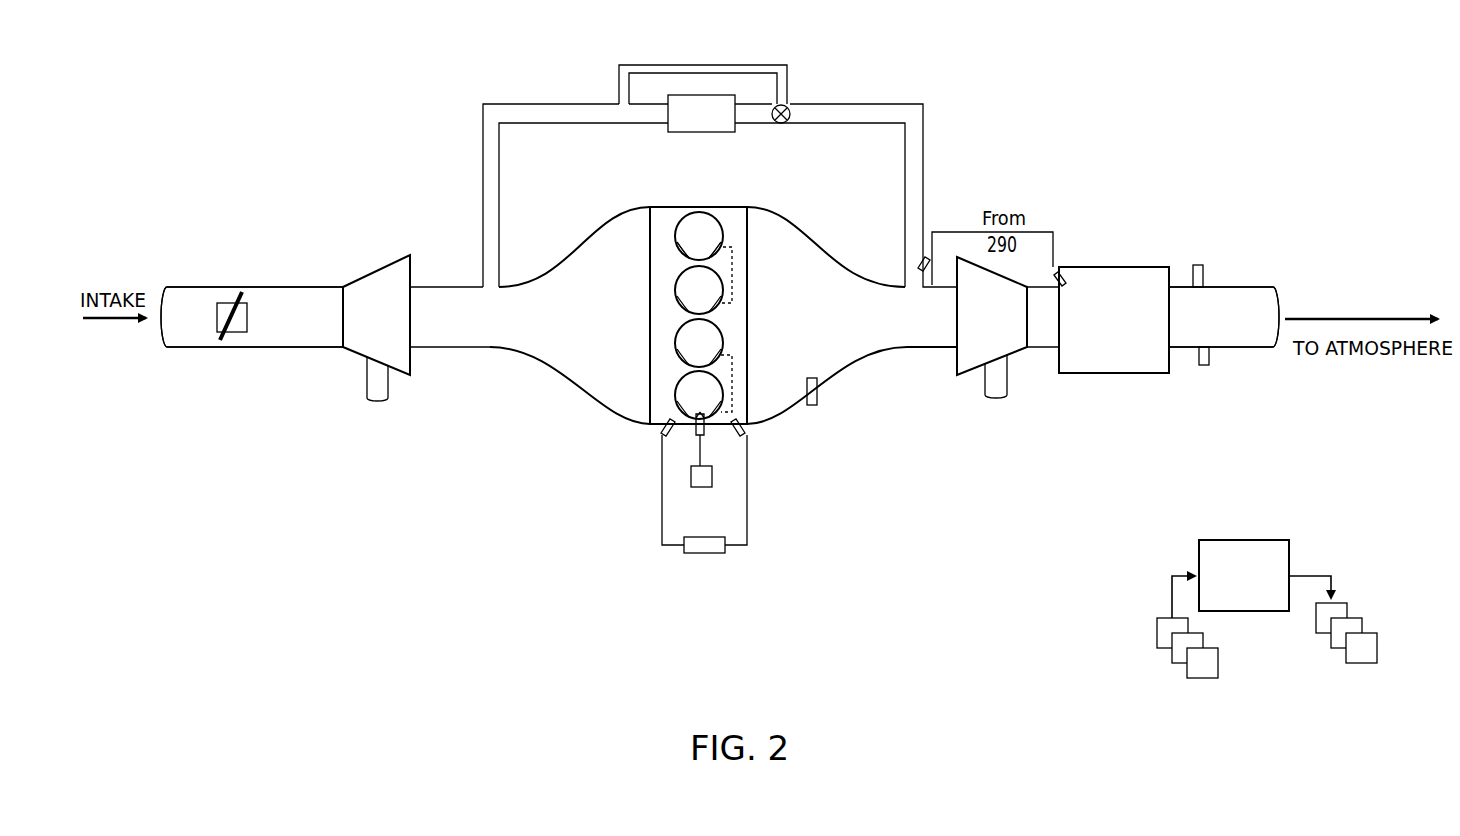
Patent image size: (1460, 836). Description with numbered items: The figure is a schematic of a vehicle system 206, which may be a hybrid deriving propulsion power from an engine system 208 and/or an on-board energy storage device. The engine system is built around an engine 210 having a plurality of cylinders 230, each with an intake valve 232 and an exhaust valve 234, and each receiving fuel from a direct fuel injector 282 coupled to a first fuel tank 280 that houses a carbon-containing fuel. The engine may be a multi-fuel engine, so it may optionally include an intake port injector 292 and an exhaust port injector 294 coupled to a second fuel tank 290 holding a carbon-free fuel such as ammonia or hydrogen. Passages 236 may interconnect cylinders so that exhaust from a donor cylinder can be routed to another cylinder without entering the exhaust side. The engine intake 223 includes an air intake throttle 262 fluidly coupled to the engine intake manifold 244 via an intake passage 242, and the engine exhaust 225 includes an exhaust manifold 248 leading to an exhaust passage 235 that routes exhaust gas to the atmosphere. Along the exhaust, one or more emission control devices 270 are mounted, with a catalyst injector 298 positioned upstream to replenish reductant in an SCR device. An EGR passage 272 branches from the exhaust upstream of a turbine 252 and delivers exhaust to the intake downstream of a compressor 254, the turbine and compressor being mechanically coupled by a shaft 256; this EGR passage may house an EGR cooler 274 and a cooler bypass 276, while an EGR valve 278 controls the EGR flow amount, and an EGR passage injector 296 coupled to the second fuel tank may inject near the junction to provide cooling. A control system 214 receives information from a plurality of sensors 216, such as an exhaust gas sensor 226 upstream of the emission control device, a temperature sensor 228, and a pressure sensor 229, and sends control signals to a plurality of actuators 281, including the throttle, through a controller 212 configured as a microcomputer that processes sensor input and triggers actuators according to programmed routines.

The vehicle system 206 is at (186, 186).
The engine system 208 is at (1307, 184).
The engine 210 is at (748, 298).
The controller 212 is at (1244, 575).
The control system 214 is at (1406, 528).
The sensors 216 is at (1226, 686).
The engine intake 223 is at (578, 242).
The engine exhaust 225 is at (822, 242).
The exhaust gas sensor 226 is at (817, 386).
The temperature sensor 228 is at (1204, 365).
The pressure sensor 229 is at (1199, 265).
The cylinders 230 is at (711, 216).
The intake valve 232 is at (677, 248).
The exhaust valve 234 is at (719, 248).
The exhaust passage 235 is at (1250, 287).
The passages 236 is at (734, 260).
The intake passage 242 is at (197, 348).
The engine intake manifold 244 is at (623, 329).
The exhaust manifold 248 is at (840, 329).
The turbine 252 is at (1004, 329).
The compressor 254 is at (392, 329).
The shaft 256 is at (984, 391).
The air intake throttle 262 is at (247, 322).
The emission control devices 270 is at (1100, 267).
The EGR passage 272 is at (924, 150).
The EGR cooler 274 is at (716, 123).
The cooler bypass 276 is at (738, 65).
The EGR valve 278 is at (789, 106).
The first fuel tank 280 is at (700, 488).
The actuators 281 is at (1391, 668).
The direct fuel injector 282 is at (703, 436).
The second fuel tank 290 is at (700, 553).
The intake port injector 292 is at (662, 436).
The exhaust port injector 294 is at (745, 436).
The EGR passage injector 296 is at (931, 290).
The catalyst injector 298 is at (1066, 282).